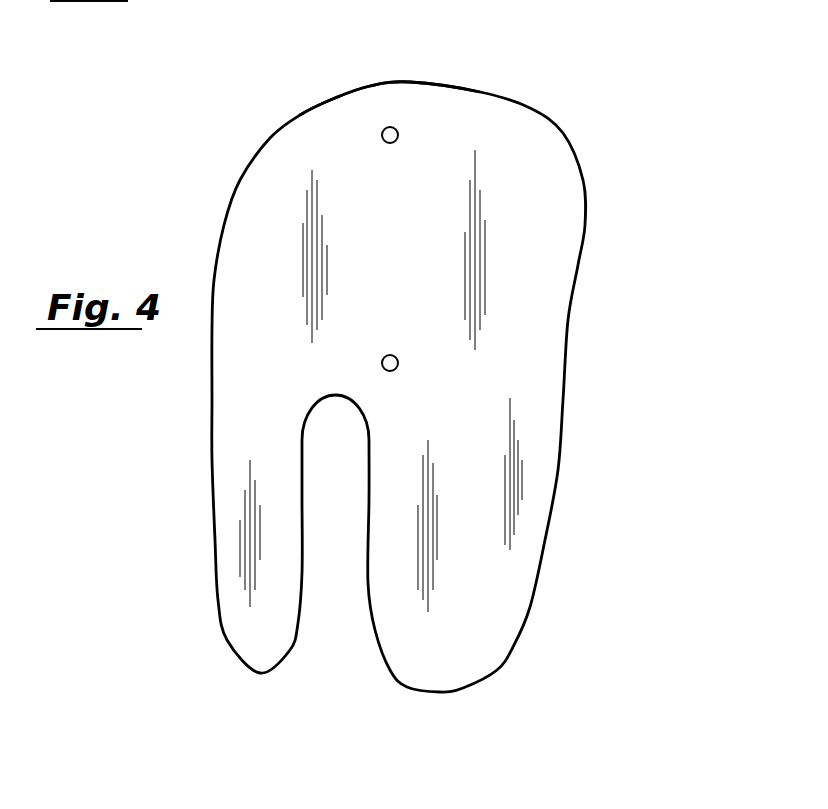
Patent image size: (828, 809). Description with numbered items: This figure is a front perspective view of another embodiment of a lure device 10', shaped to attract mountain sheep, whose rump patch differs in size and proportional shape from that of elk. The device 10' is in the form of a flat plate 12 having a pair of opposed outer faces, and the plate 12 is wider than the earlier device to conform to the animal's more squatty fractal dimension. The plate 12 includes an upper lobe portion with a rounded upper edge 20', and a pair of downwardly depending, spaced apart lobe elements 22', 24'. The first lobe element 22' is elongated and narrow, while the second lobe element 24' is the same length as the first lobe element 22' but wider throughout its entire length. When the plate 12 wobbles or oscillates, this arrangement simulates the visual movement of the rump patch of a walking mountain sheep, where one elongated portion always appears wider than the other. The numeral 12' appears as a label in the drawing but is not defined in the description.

The lure device 10' is at (432, 361).
The flat plate 12 is at (576, 250).
The engagement region 12' is at (288, 215).
The rounded upper edge 20' is at (387, 66).
The first lobe element 22' is at (188, 533).
The second lobe element 24' is at (584, 474).